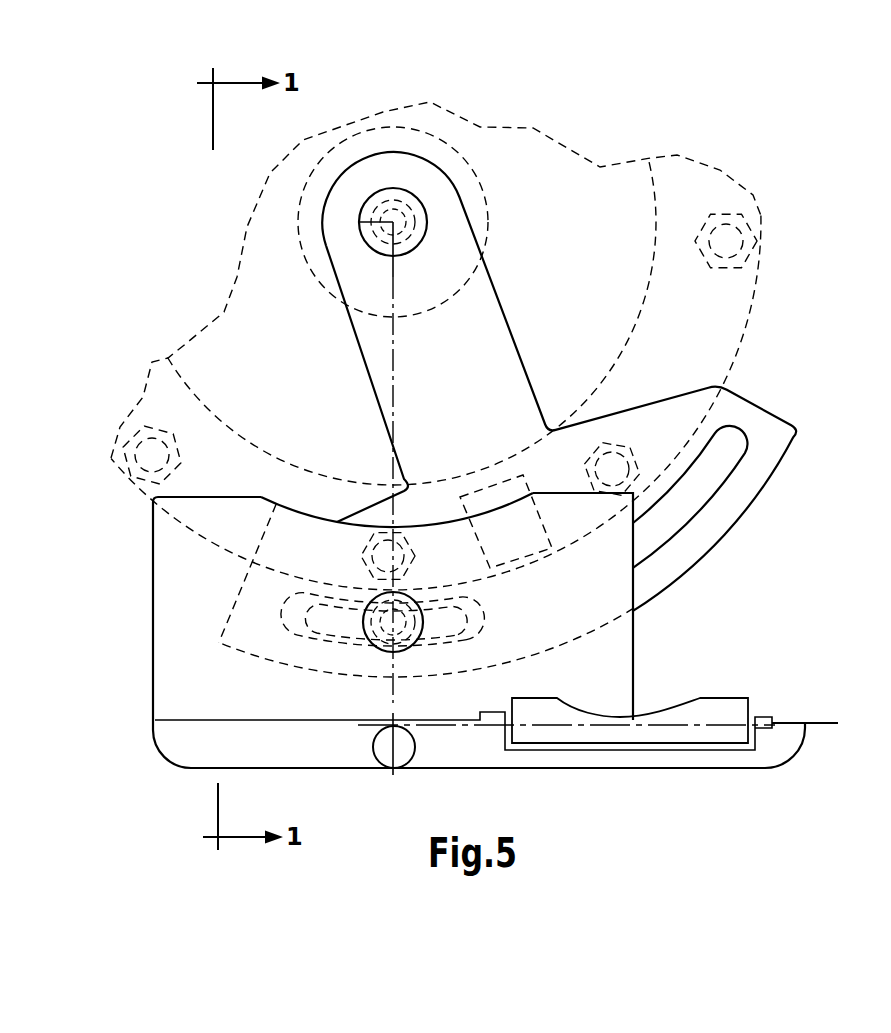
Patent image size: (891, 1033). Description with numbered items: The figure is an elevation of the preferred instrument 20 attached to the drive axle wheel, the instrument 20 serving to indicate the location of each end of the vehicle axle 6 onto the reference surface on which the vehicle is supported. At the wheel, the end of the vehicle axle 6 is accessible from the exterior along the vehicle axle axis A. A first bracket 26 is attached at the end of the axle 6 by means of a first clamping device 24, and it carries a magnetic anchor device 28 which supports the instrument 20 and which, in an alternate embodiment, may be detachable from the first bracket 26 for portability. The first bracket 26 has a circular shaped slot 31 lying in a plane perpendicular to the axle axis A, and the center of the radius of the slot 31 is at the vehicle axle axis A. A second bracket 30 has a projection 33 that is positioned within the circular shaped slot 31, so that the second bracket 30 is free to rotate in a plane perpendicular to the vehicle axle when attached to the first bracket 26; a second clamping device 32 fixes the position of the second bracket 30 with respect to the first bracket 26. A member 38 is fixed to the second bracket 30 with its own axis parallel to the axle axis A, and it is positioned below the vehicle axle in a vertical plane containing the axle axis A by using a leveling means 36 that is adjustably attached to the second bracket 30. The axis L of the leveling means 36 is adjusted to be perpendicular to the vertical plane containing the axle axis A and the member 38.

The vehicle axle 6 is at (767, 218).
The instrument 20 is at (550, 374).
The first clamping device 24 is at (427, 220).
The vehicle axle axis A is at (360, 221).
The first bracket 26 is at (745, 410).
The magnetic anchor device 28 is at (485, 487).
The second bracket 30 is at (622, 667).
The circular shaped slot 31 is at (710, 475).
The second clamping device 32 is at (403, 603).
The projection 33 is at (342, 630).
The leveling means 36 is at (720, 712).
The member 38 is at (382, 750).
The axis of the leveling means L is at (817, 722).